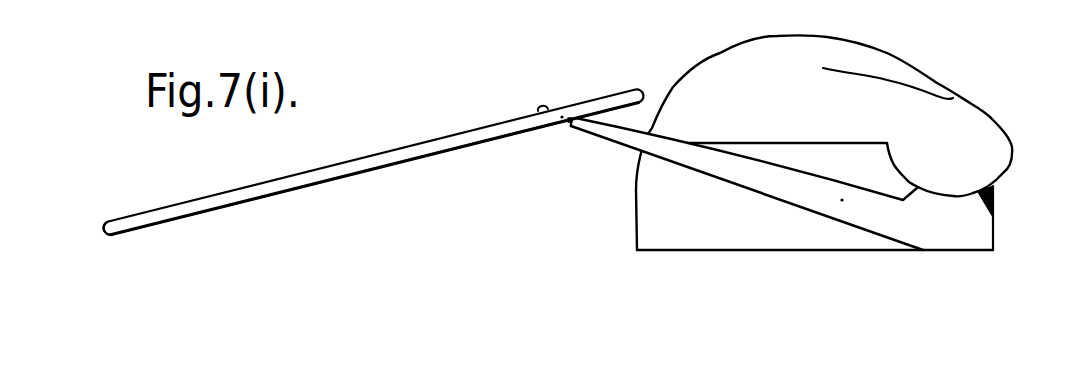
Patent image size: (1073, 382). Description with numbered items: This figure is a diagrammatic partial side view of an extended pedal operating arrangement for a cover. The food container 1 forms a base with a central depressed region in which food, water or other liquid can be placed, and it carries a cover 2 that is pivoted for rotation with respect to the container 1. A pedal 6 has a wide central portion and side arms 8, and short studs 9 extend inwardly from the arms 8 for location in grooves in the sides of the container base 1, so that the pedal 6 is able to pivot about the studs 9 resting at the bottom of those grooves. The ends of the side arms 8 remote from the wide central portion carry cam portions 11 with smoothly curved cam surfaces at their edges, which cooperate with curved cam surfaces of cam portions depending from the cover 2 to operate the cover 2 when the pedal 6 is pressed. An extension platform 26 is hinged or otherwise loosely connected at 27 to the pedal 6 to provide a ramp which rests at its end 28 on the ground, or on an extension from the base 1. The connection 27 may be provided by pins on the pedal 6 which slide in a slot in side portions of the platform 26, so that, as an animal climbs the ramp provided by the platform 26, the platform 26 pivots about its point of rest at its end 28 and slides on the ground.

The food container 1 is at (760, 230).
The cover 2 is at (863, 59).
The pedal 6 is at (545, 104).
The side arms 8 is at (730, 170).
The studs 9 is at (845, 207).
The cam portions 11 is at (940, 218).
The extension platform 26 is at (387, 161).
The connection 27 is at (570, 126).
The end 28 is at (118, 233).